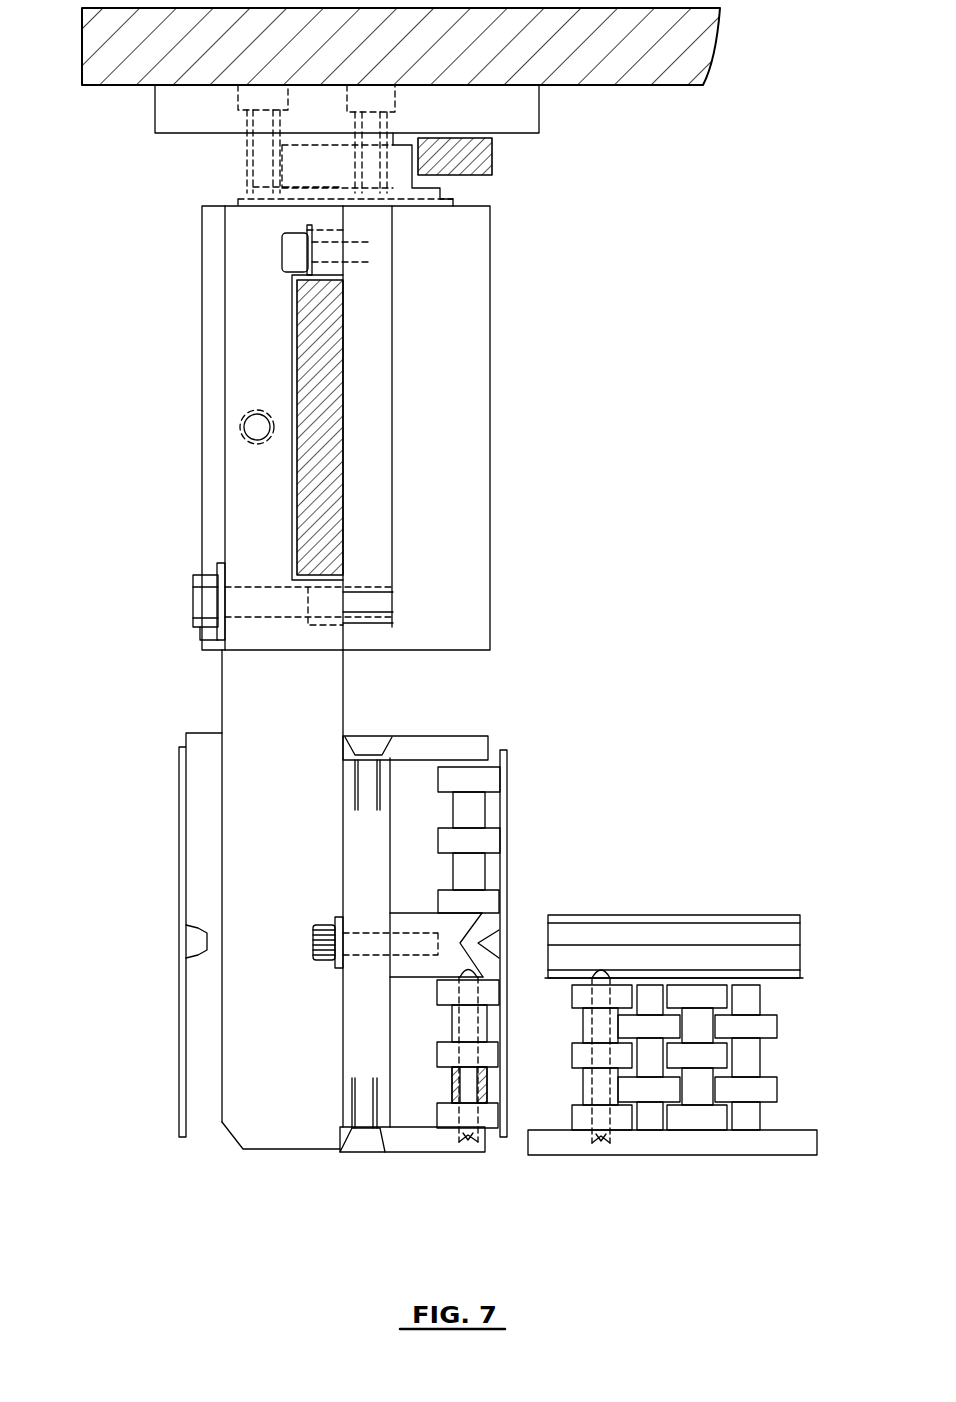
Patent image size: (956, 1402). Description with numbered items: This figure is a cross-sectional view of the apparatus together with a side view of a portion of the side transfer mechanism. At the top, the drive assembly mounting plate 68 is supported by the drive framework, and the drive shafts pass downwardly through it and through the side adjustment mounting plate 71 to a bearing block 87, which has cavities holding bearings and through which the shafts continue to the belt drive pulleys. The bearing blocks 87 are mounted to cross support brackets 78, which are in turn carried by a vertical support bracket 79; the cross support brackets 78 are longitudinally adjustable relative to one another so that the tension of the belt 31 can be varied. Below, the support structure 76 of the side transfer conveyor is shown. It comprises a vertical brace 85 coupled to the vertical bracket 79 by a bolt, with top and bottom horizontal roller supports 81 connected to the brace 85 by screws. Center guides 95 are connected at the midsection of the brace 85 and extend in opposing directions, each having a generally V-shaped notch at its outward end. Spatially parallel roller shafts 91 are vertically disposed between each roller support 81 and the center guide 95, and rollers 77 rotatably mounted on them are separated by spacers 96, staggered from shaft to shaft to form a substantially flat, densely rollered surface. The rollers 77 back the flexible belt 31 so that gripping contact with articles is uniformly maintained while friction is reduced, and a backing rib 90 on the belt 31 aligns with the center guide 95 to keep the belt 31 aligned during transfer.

The drive assembly mounting plate 68 is at (640, 77).
The side adjustment mounting plate 71 is at (539, 123).
The support structure 76 is at (520, 720).
The roller 77 is at (483, 782).
The cross support bracket 78 is at (377, 305).
The vertical support bracket 79 is at (253, 333).
The roller support 81 is at (453, 747).
The vertical brace 85 is at (362, 847).
The bearing block 87 is at (210, 462).
The backing rib 90 is at (198, 942).
The roller shaft 91 is at (463, 1027).
The center guide 95 is at (412, 923).
The spacer 96 is at (465, 815).
The belt 31 is at (503, 868).